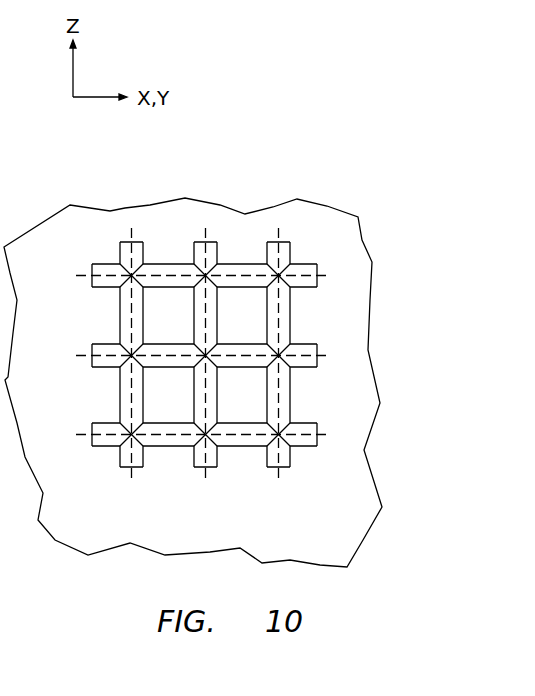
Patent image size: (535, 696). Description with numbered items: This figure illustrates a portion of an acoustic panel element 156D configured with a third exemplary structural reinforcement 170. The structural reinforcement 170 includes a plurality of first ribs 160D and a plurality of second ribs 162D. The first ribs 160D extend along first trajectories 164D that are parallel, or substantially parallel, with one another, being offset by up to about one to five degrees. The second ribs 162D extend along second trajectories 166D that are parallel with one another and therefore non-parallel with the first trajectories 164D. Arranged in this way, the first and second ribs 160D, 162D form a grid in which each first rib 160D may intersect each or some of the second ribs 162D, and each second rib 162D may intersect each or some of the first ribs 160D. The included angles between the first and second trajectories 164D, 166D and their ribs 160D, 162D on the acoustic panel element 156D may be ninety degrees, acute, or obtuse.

The acoustic panel element 156D is at (329, 209).
The first ribs 160D is at (98, 264).
The second ribs 162D is at (290, 316).
The first trajectories 164D is at (323, 275).
The second trajectories 166D is at (131, 242).
The structural reinforcement 170 is at (293, 453).